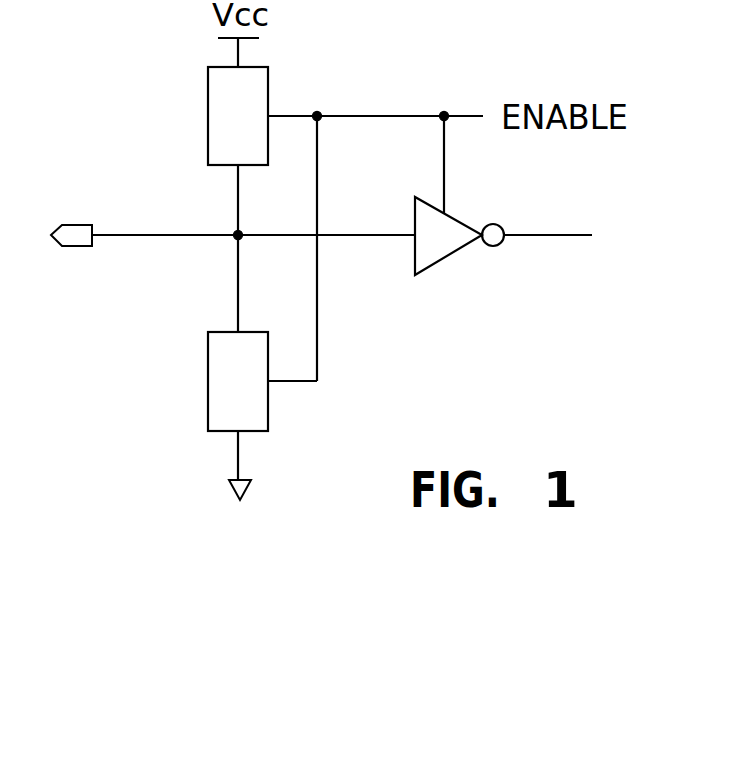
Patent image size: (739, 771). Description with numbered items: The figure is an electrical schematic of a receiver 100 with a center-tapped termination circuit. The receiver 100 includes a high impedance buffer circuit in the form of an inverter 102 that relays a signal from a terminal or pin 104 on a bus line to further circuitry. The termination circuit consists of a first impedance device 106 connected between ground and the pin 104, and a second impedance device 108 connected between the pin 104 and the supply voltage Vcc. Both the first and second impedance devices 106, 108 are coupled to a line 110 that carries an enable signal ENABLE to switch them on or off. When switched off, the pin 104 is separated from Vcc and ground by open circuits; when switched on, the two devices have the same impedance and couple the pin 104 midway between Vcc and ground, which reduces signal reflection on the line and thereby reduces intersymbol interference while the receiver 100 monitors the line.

The receiver 100 is at (462, 387).
The inverter 102 is at (447, 258).
The pin 104 is at (68, 223).
The first impedance device 106 is at (208, 379).
The second impedance device 108 is at (208, 113).
The line 110 is at (317, 155).